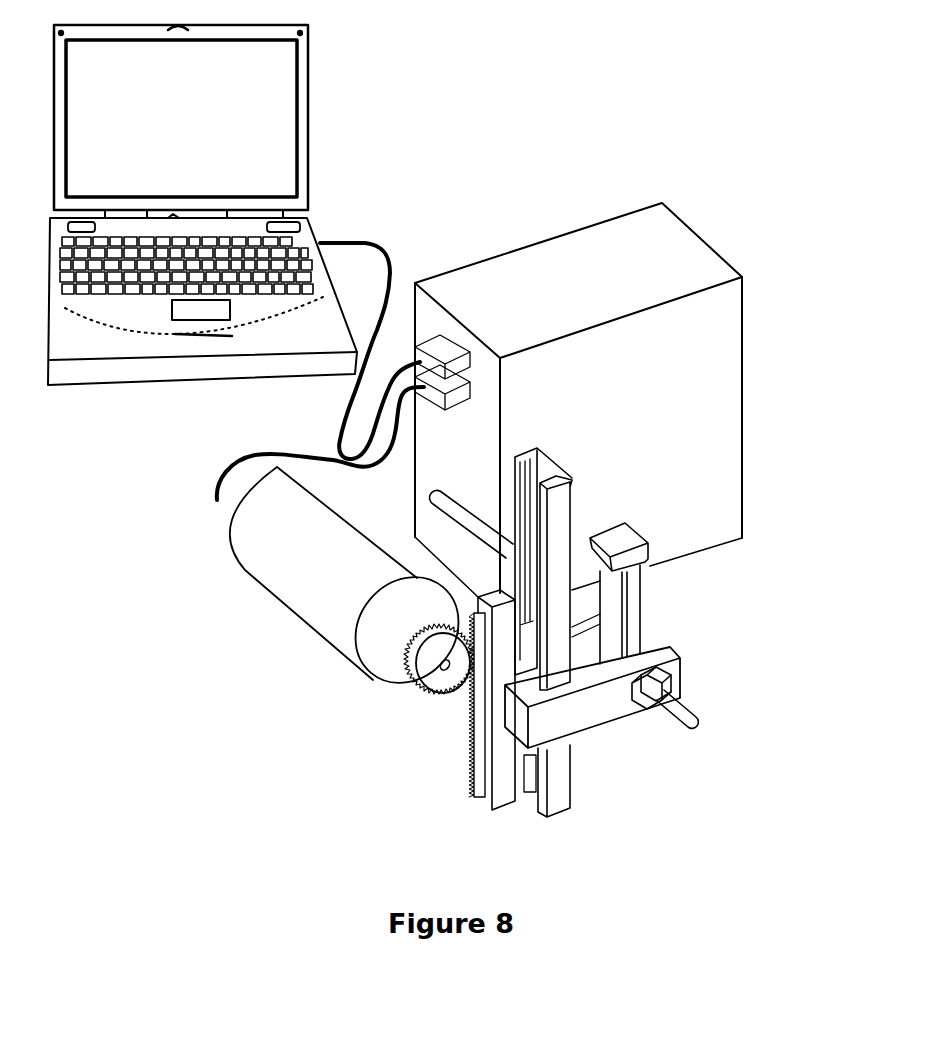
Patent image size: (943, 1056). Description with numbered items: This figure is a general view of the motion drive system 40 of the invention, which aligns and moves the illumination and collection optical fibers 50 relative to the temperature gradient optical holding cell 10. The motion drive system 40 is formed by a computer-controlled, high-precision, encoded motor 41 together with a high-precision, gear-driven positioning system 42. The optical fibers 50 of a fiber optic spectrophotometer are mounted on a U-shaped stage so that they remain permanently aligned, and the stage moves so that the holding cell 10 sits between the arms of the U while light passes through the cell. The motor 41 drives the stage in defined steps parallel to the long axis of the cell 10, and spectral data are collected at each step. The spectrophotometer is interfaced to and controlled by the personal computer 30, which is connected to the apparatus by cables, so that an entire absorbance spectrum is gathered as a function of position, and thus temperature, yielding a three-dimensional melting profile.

The temperature gradient optical holding cell 10 is at (632, 604).
The personal computer 30 is at (245, 118).
The motion drive system 40 is at (258, 606).
The encoded motor 41 is at (265, 537).
The positioning system 42 is at (515, 715).
The optical fibers 50 is at (461, 514).